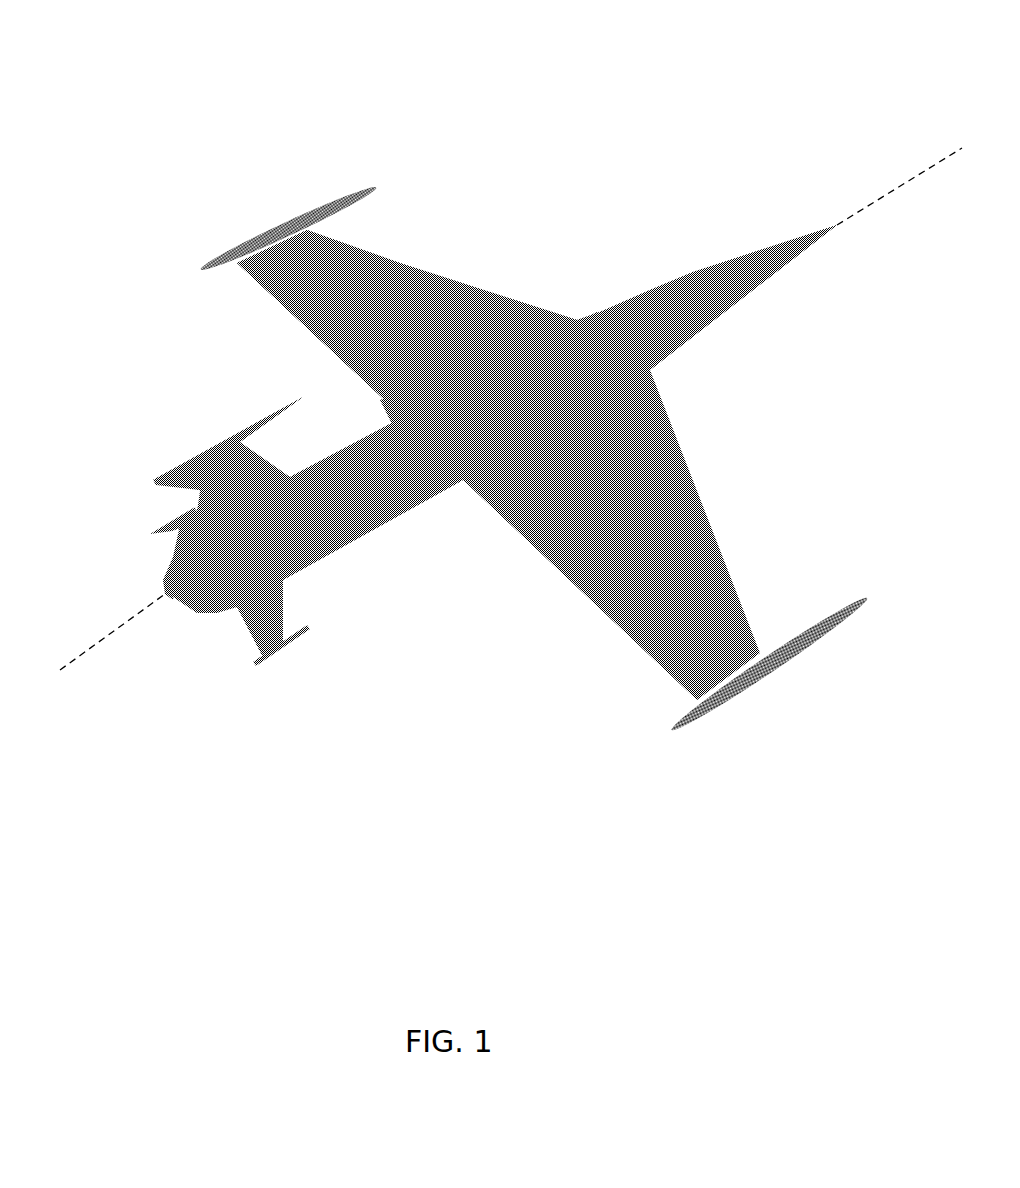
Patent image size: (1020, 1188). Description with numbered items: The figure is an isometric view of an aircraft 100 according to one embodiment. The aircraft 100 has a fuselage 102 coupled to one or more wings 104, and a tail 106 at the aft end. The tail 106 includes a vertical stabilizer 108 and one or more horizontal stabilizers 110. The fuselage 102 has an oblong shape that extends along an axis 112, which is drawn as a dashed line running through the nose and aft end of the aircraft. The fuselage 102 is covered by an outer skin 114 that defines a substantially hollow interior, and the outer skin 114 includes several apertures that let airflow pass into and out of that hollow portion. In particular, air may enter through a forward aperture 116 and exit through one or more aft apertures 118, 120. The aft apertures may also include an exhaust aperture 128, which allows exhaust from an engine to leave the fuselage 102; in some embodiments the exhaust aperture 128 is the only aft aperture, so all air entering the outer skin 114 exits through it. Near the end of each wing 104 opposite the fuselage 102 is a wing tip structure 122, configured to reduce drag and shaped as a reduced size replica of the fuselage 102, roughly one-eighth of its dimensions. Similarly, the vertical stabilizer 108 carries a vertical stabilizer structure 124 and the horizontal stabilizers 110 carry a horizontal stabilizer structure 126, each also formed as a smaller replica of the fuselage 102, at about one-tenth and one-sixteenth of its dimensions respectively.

The aircraft 100 is at (600, 78).
The fuselage 102 is at (735, 318).
The wings 104 is at (415, 282).
The tail 106 is at (173, 555).
The vertical stabilizer 108 is at (203, 490).
The horizontal stabilizers 110 is at (258, 617).
The axis 112 is at (890, 195).
The outer skin 114 is at (563, 352).
The forward aperture 116 is at (692, 290).
The aft aperture 118 is at (410, 480).
The aft aperture 120 is at (395, 413).
The wing tip structure 122 is at (805, 640).
The vertical stabilizer structure 124 is at (212, 437).
The horizontal stabilizer structure 126 is at (282, 653).
The exhaust aperture 128 is at (158, 595).